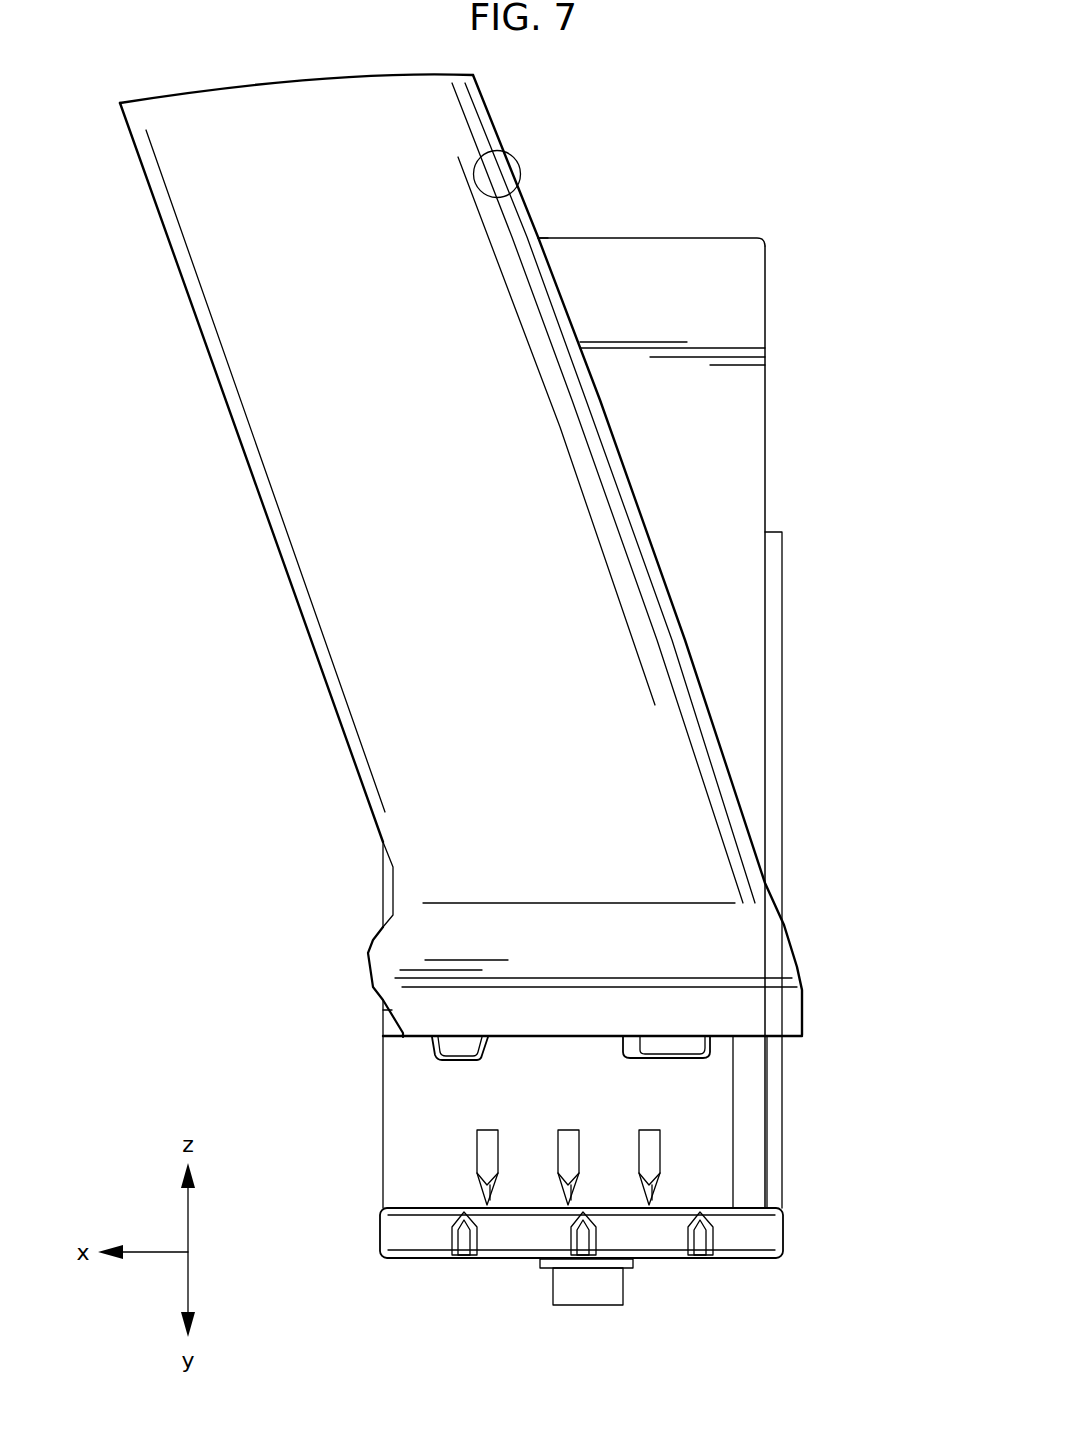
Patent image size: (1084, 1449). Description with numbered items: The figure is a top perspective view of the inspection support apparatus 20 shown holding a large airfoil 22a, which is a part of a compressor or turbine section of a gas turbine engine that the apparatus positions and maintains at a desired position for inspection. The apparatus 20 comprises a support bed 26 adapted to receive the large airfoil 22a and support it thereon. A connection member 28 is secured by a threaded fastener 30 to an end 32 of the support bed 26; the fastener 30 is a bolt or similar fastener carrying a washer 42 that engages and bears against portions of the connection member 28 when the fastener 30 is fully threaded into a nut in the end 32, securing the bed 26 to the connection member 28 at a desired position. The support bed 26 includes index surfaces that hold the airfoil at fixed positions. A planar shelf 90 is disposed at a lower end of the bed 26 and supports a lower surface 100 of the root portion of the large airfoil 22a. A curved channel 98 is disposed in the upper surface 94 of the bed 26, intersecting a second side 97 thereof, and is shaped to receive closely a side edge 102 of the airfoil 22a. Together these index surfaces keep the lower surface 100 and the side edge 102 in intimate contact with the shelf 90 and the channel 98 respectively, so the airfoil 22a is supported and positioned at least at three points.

The inspection support apparatus 20 is at (848, 328).
The large airfoil 22a is at (500, 159).
The support bed 26 is at (612, 267).
The connection member 28 is at (745, 1243).
The threaded fastener 30 is at (608, 1297).
The end of the support bed 32 is at (775, 1087).
The washer 42 is at (633, 1265).
The shelf 90 is at (453, 1053).
The upper surface 94 is at (723, 513).
The second side 97 is at (756, 665).
The curved channel 98 is at (541, 233).
The lower surface 100 is at (725, 1037).
The side edge 102 is at (494, 151).